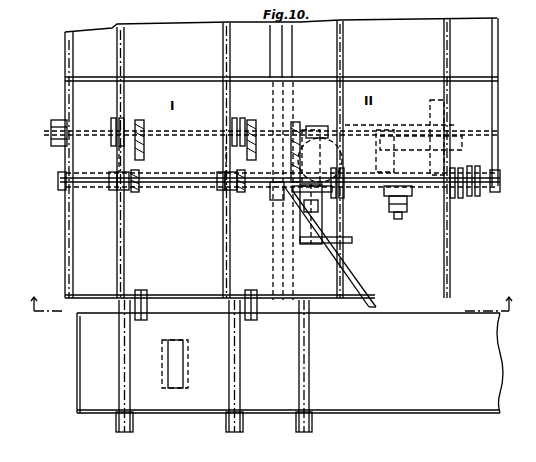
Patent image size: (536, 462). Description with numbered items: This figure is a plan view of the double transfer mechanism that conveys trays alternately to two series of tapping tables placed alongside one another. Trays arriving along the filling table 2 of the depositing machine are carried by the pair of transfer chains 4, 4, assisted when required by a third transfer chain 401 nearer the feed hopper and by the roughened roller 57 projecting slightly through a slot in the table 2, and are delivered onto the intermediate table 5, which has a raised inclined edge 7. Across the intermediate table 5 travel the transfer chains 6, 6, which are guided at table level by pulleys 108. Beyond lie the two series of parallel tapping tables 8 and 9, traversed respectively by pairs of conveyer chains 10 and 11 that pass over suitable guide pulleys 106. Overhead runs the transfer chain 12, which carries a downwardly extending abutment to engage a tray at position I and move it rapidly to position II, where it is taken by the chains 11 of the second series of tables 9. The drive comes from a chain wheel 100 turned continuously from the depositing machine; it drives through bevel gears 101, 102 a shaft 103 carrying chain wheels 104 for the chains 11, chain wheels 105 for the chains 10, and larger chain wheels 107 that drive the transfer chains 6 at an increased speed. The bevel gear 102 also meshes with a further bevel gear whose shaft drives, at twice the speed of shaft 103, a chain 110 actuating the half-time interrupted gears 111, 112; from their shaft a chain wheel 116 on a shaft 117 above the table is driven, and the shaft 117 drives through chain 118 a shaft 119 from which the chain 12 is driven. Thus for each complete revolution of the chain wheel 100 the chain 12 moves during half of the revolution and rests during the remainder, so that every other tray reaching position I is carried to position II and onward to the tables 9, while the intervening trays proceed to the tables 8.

The base frame 2 is at (76, 374).
The transfer chains 4 is at (130, 365).
The intermediate table 5 is at (194, 201).
The transfer chains 6 is at (124, 276).
The raised inclined edge 7 is at (348, 283).
The series of tapping tables 8 is at (169, 54).
The series of tapping tables 9 is at (270, 179).
The conveyer chains 10 is at (128, 52).
The conveyer chains 11 is at (343, 60).
The overhead conveyer chain 12 is at (168, 134).
The roller 57 is at (183, 378).
The chain wheel 100 is at (352, 240).
The bevel gear 101 is at (322, 204).
The bevel gear 102 is at (338, 158).
The shaft 103 is at (176, 180).
The chain wheels 104 is at (344, 172).
The chain wheels 105 is at (124, 192).
The guide pulleys 106 is at (111, 130).
The chain wheels 107 is at (140, 192).
The pulleys 108 is at (140, 120).
The chain 110 is at (375, 125).
The half-time interrupted gear 111 is at (462, 142).
The half-time interrupted gear 112 is at (378, 144).
The chain wheel 116 is at (407, 206).
The shaft 117 is at (401, 219).
The chain 118 is at (384, 193).
The shaft 119 is at (278, 200).
The third transfer chain 401 is at (309, 378).